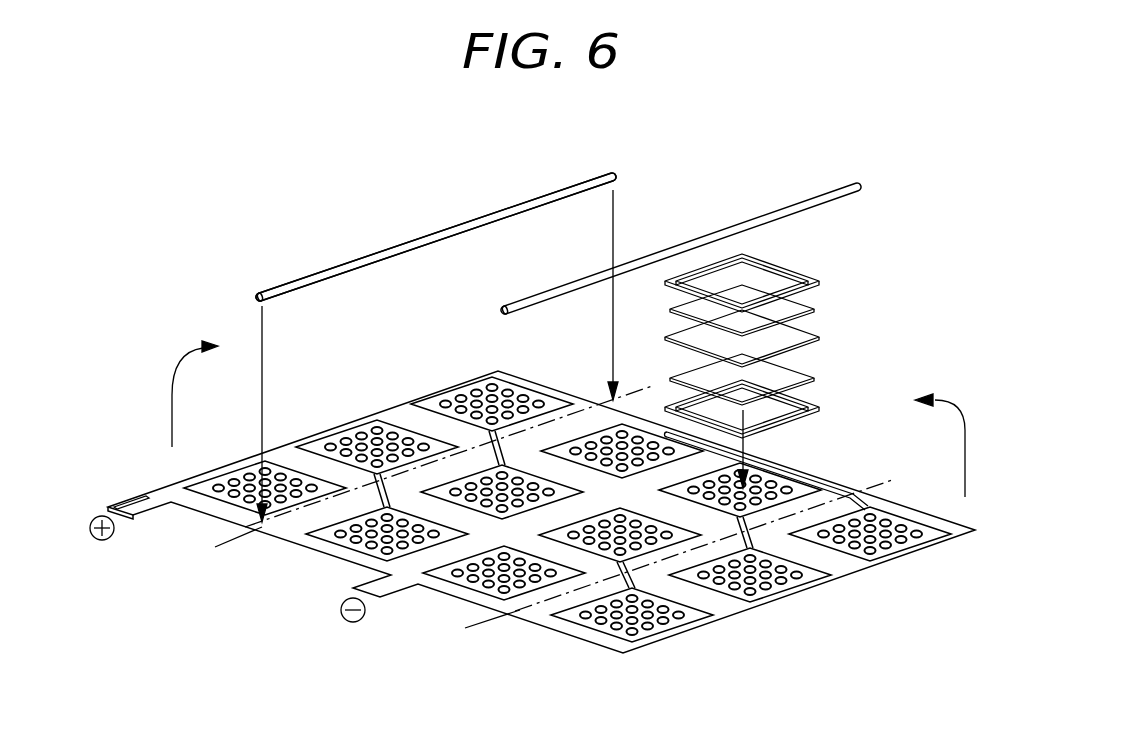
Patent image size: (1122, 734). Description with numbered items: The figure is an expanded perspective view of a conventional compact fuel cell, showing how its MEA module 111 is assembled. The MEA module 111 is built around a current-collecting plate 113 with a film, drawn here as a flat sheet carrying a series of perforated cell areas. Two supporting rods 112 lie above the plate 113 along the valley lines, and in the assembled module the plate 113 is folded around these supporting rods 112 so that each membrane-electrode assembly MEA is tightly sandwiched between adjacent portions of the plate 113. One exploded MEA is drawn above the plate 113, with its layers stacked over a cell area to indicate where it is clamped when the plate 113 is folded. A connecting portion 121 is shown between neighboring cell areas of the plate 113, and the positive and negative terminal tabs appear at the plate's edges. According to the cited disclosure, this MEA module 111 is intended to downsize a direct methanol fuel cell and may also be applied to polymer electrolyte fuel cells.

The MEA module 111 is at (333, 213).
The supporting rods 112 is at (562, 190).
The current-collecting plate 113 is at (743, 611).
The connecting portion 121 is at (623, 558).
The membrane-electrode assembly MEA is at (832, 245).